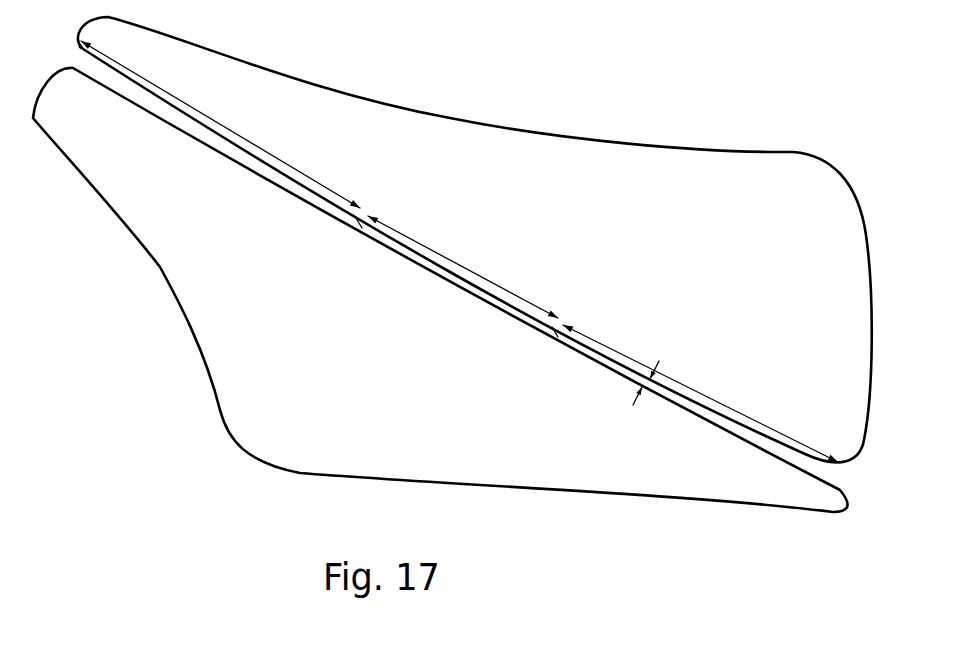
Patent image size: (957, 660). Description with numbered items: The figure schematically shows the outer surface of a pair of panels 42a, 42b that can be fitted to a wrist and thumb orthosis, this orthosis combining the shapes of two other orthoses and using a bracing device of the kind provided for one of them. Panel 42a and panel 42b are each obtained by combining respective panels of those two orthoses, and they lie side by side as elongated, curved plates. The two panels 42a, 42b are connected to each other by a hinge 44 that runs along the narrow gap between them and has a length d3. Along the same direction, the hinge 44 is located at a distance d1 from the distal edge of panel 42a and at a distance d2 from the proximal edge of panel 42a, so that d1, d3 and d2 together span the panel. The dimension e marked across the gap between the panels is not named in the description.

The panel 42a is at (797, 172).
The panel 42b is at (810, 495).
The hinge 44 is at (437, 266).
The distance from distal edge d1 is at (220, 124).
The distance from proximal edge d2 is at (700, 393).
The hinge length d3 is at (463, 267).
The interstice thickness e is at (638, 387).